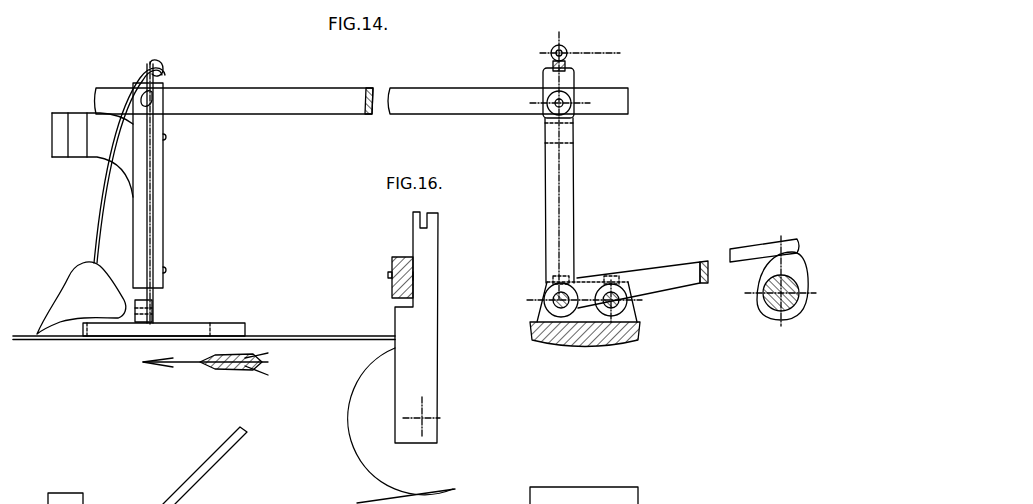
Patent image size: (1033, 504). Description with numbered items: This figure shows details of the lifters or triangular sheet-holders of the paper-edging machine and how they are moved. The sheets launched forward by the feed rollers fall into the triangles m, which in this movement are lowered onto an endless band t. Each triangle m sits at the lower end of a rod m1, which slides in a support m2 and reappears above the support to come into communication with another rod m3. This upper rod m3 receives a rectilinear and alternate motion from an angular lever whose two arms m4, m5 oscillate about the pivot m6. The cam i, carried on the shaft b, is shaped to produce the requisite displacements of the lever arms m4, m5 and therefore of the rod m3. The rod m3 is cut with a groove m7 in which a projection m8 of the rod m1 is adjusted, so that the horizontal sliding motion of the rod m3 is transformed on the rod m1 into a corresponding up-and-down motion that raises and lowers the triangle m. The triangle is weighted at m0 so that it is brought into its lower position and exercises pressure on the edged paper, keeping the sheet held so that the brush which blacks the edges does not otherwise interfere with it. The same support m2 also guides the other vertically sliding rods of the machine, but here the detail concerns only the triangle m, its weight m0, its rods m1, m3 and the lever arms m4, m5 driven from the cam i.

In FIG. 14, the triangle m is at (204, 323).
In FIG. 16, the triangle m is at (205, 465).
In FIG. 14, the weight m0 is at (81, 298).
In FIG. 14, the rod m1 is at (153, 95).
In FIG. 14, the support m2 is at (121, 185).
In FIG. 14, the rod m3 is at (362, 90).
In FIG. 16, the rod m3 is at (397, 268).
In FIG. 14, the angular lever arm m4 is at (575, 166).
In FIG. 14, the angular lever arm m5 is at (642, 270).
In FIG. 14, the pivot m6 is at (573, 311).
In FIG. 14, the groove m7 is at (153, 306).
In FIG. 16, the groove m7 is at (417, 327).
In FIG. 16, the projection m8 is at (413, 272).
In FIG. 16, the endless band t is at (219, 426).
In FIG. 14, the shaft b is at (769, 281).
In FIG. 14, the cam i is at (780, 309).